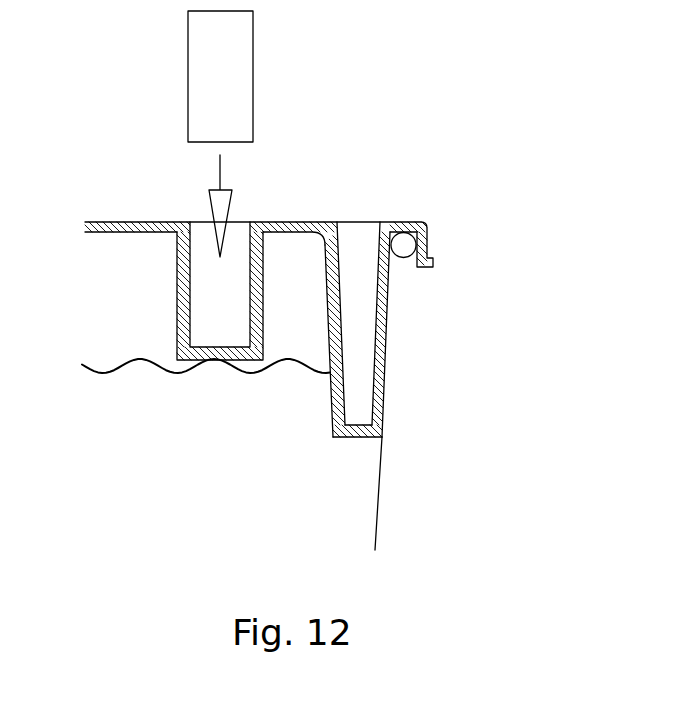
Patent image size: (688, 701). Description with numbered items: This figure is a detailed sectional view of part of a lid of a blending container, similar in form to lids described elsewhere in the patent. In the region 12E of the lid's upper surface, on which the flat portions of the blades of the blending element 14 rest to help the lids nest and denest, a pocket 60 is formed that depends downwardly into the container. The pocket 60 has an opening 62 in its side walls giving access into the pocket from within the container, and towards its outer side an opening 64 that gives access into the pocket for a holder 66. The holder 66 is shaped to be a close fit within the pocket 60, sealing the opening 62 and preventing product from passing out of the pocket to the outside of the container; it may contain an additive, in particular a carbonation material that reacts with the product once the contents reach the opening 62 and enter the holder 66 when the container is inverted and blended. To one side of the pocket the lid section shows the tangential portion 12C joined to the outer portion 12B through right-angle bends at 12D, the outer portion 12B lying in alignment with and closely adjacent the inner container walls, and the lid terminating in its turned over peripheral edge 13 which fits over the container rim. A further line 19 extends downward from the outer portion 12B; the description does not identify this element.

The blending element 14 is at (394, 180).
The upper surface region of the lid 12E is at (127, 221).
The opening 62 is at (177, 297).
The holder 66 is at (254, 70).
The opening 64 is at (239, 229).
The pocket 60 is at (222, 372).
The tangential portion 12C is at (324, 320).
The outer portion 12B is at (388, 340).
The right-angle bends 12D is at (353, 440).
The skirt 19 is at (380, 503).
The turned over peripheral edge 13 is at (427, 247).